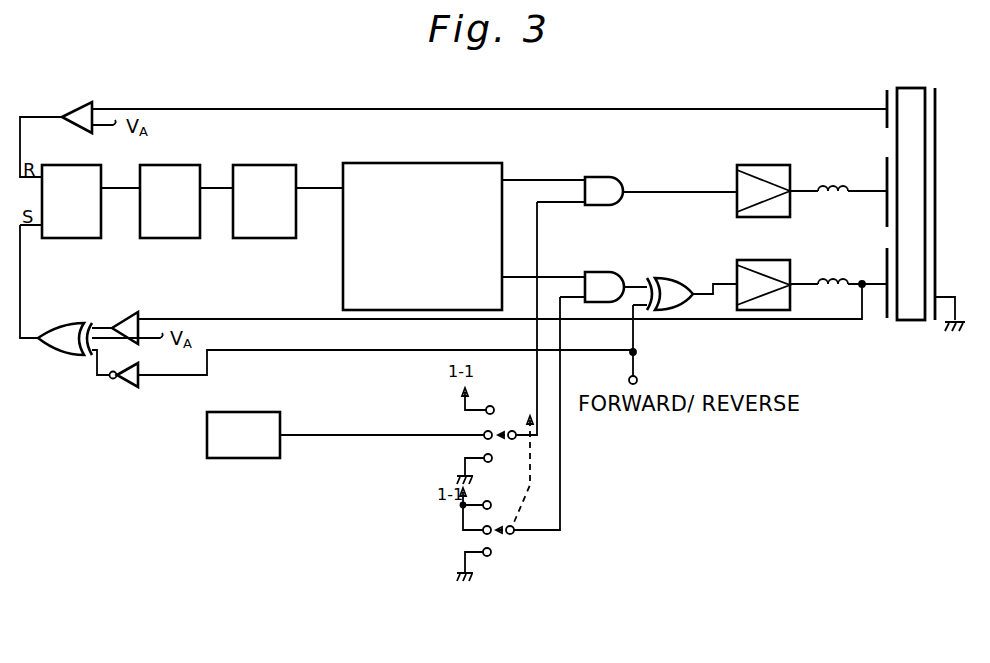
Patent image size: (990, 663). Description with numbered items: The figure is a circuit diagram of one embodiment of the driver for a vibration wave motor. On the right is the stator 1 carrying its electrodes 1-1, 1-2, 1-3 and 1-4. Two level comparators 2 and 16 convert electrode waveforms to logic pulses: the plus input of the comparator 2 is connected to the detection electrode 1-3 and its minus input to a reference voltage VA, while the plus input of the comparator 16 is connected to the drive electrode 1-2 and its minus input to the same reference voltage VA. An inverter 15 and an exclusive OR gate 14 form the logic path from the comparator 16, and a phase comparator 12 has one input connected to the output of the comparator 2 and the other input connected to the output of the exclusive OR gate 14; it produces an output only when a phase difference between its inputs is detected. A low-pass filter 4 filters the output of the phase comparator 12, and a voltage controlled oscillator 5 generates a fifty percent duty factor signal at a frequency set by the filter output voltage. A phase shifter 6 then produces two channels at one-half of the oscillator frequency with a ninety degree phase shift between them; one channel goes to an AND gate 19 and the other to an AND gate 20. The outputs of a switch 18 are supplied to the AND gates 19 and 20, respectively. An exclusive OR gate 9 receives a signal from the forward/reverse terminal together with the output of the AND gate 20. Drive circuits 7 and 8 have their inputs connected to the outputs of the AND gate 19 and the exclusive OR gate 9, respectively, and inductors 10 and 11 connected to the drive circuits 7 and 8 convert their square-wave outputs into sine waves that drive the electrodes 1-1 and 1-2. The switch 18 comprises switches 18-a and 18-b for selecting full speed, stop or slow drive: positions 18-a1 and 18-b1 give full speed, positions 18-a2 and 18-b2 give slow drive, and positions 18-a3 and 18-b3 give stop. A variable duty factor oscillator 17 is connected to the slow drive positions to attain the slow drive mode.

The stator 1 is at (910, 324).
The drive electrode 1-1 is at (884, 187).
The drive electrode 1-2 is at (886, 283).
The detection electrode 1-3 is at (880, 108).
The electrode 1-4 is at (940, 296).
The level comparator 2 is at (79, 102).
The low-pass filter 4 is at (172, 238).
The voltage controlled oscillator 5 is at (268, 238).
The phase shifter 6 is at (343, 292).
The drive circuit 7 is at (755, 165).
The drive circuit 8 is at (759, 263).
The exclusive OR gate 9 is at (666, 278).
The inductor 10 is at (818, 186).
The inductor 11 is at (822, 282).
The phase comparator 12 is at (78, 238).
The exclusive OR gate 14 is at (62, 322).
The inverter 15 is at (128, 389).
The level comparator 16 is at (130, 312).
The variable duty factor oscillator 17 is at (242, 412).
The switch 18 is at (486, 495).
The switch 18-a is at (520, 439).
The full speed contact of switch 18-a 18-a1 is at (491, 405).
The slow drive contact of switch 18-a 18-a2 is at (480, 431).
The stop contact of switch 18-a 18-a3 is at (482, 458).
The switch 18-b is at (518, 535).
The full speed contact of switch 18-b 18-b1 is at (489, 499).
The slow drive contact of switch 18-b 18-b2 is at (490, 556).
The stop contact of switch 18-b 18-b3 is at (490, 558).
The AND gate 19 is at (610, 176).
The AND gate 20 is at (596, 272).